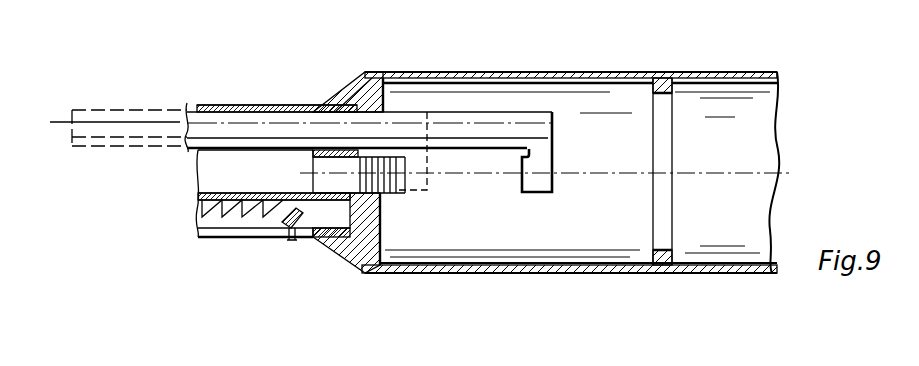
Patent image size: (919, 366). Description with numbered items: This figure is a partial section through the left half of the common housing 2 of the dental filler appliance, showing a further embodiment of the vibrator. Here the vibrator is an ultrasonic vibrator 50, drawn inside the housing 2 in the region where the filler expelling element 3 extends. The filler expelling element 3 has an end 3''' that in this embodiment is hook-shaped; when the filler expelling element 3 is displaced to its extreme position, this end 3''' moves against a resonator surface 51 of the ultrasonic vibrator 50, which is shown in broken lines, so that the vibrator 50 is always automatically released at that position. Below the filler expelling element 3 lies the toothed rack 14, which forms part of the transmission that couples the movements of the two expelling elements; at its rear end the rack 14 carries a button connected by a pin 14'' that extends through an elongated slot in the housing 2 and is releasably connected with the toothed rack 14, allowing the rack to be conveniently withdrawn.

The housing 2 is at (518, 72).
The filler expelling element 3 is at (301, 95).
The hook-shaped end of the filler expelling element 3''' is at (585, 105).
The toothed rack 14 is at (273, 221).
The pin 14'' is at (293, 250).
The ultrasonic vibrator 50 is at (390, 183).
The resonator surface 51 is at (436, 160).